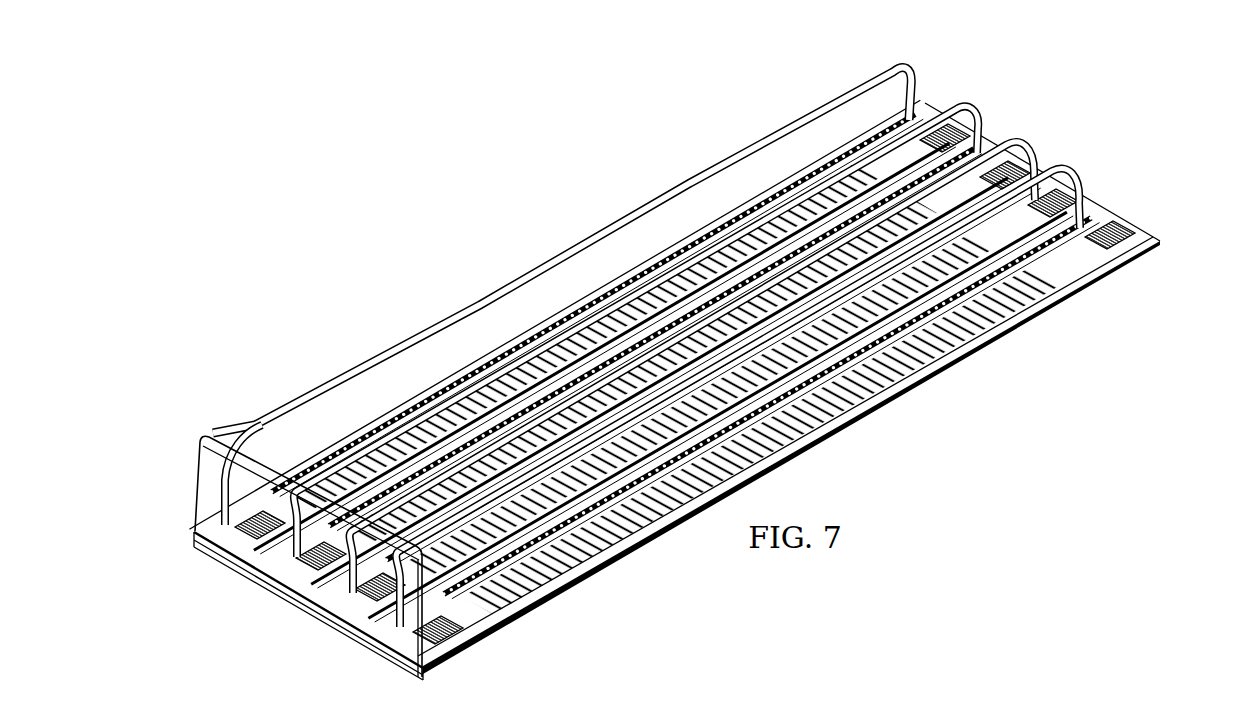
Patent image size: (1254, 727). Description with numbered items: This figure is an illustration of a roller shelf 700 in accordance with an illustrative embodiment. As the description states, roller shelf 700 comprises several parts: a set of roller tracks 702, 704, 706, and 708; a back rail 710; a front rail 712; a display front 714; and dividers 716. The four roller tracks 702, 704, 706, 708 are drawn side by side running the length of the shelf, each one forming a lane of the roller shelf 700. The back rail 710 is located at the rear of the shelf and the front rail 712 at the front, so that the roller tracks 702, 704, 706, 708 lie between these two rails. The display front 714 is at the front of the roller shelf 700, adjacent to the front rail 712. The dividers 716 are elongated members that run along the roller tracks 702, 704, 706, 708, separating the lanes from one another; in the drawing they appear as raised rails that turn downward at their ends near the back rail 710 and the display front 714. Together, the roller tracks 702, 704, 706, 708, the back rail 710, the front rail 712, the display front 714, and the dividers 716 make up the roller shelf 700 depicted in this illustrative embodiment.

The roller shelf 700 is at (477, 270).
The roller track 702 is at (944, 79).
The roller track 704 is at (1002, 112).
The roller track 706 is at (1060, 145).
The roller track 708 is at (1115, 178).
The back rail 710 is at (1163, 242).
The front rail 712 is at (303, 613).
The display front 714 is at (183, 481).
The dividers 716 is at (668, 181).